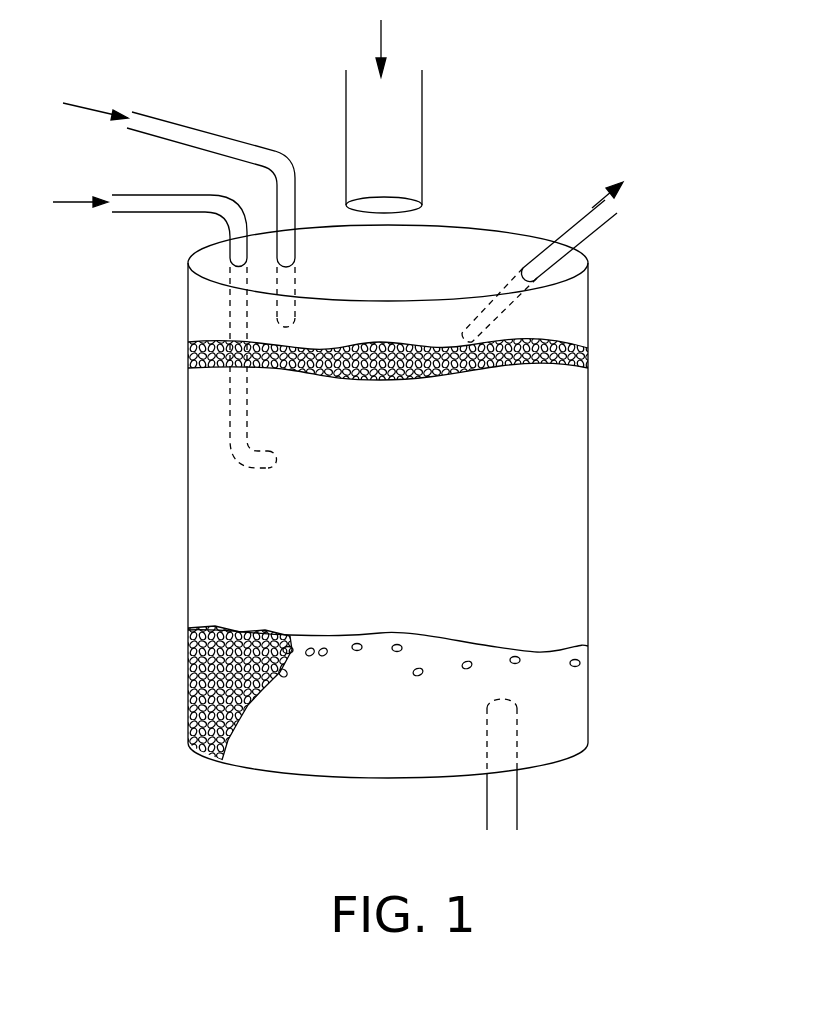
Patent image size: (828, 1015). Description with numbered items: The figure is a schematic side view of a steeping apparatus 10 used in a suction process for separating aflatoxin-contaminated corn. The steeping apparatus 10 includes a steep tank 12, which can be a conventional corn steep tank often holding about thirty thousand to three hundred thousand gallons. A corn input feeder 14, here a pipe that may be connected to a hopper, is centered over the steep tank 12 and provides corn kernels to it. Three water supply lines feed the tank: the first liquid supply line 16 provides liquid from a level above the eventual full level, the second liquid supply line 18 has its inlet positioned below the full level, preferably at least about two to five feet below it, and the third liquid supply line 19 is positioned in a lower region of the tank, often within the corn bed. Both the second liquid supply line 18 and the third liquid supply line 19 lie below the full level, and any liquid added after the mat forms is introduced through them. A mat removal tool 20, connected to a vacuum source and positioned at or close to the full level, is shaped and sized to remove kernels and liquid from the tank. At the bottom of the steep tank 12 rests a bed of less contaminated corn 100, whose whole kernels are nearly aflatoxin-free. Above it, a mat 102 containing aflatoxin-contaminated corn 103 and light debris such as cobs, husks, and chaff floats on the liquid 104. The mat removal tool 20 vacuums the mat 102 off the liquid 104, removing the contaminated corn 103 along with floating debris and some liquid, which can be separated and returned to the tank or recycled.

The steeping apparatus 10 is at (568, 67).
The steep tank 12 is at (335, 501).
The corn input feeder 14 is at (419, 116).
The first liquid supply line 16 is at (179, 201).
The second liquid supply line 18 is at (165, 331).
The third liquid supply line 19 is at (555, 765).
The mat removal tool 20 is at (542, 262).
The bed of less contaminated corn 100 is at (192, 693).
The mat 102 is at (426, 343).
The aflatoxin-contaminated corn 103 is at (433, 392).
The liquid 104 is at (436, 593).